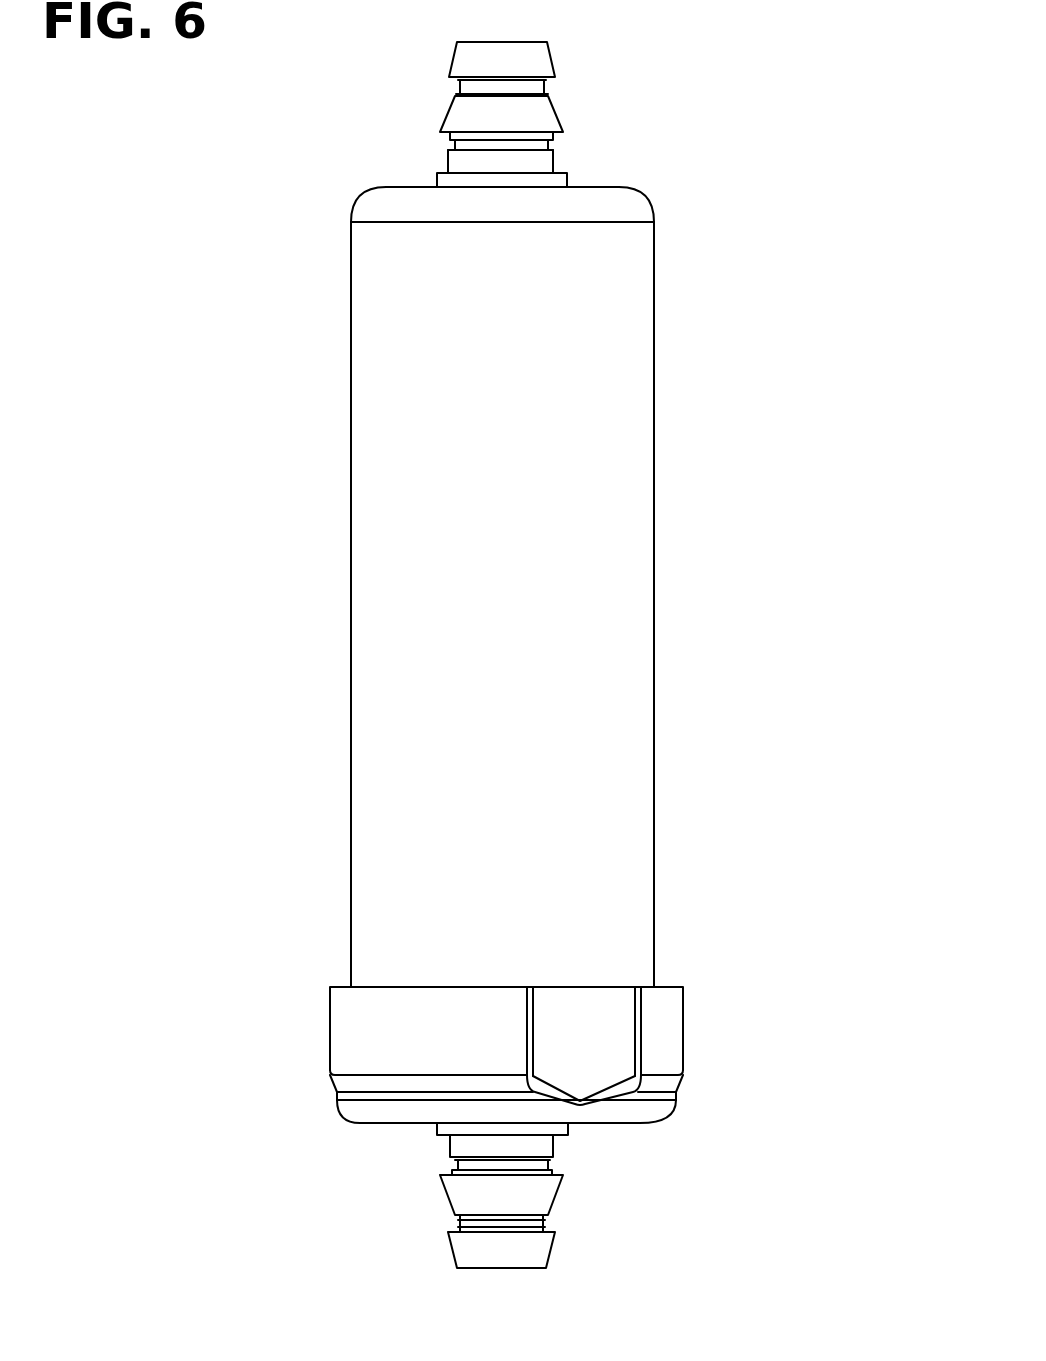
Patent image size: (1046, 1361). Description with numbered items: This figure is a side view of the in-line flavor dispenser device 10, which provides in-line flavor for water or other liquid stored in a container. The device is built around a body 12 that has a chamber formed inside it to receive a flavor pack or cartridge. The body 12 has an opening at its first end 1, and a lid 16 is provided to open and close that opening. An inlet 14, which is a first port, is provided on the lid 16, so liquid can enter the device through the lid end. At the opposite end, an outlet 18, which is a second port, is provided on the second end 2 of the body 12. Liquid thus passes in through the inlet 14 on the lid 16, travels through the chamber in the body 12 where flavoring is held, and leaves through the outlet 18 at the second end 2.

The in-line flavor dispenser device 10 is at (800, 140).
The outlet 18 is at (507, 42).
The second end 2 is at (597, 187).
The body 12 is at (655, 553).
The lid 16 is at (683, 1043).
The first end 1 is at (607, 1123).
The inlet 14 is at (518, 1270).